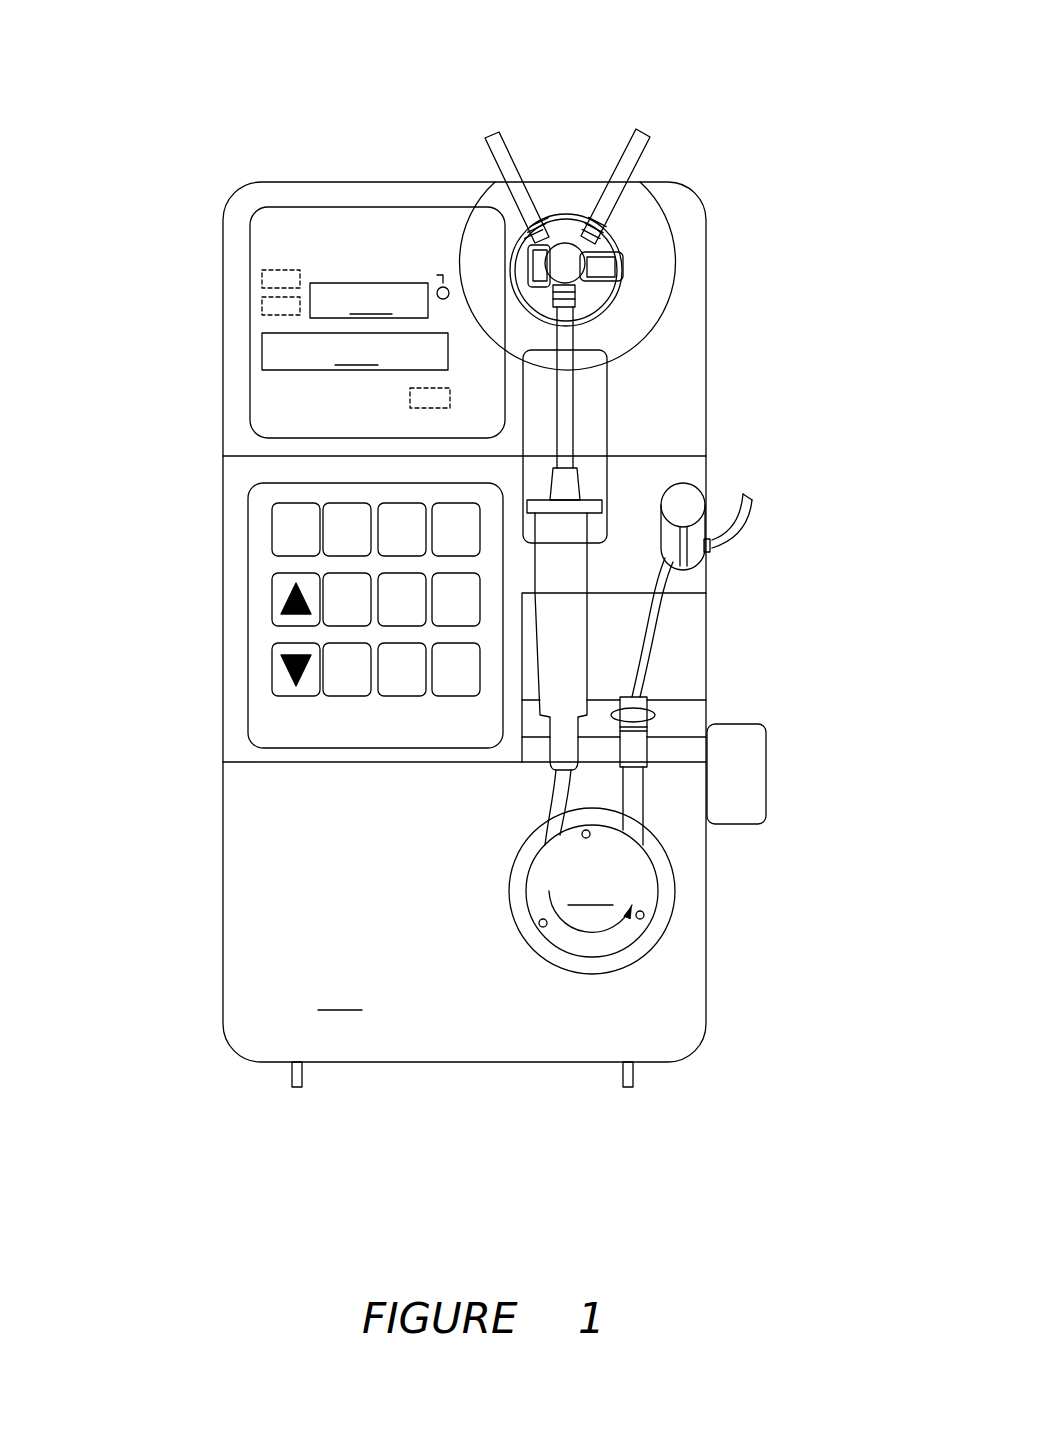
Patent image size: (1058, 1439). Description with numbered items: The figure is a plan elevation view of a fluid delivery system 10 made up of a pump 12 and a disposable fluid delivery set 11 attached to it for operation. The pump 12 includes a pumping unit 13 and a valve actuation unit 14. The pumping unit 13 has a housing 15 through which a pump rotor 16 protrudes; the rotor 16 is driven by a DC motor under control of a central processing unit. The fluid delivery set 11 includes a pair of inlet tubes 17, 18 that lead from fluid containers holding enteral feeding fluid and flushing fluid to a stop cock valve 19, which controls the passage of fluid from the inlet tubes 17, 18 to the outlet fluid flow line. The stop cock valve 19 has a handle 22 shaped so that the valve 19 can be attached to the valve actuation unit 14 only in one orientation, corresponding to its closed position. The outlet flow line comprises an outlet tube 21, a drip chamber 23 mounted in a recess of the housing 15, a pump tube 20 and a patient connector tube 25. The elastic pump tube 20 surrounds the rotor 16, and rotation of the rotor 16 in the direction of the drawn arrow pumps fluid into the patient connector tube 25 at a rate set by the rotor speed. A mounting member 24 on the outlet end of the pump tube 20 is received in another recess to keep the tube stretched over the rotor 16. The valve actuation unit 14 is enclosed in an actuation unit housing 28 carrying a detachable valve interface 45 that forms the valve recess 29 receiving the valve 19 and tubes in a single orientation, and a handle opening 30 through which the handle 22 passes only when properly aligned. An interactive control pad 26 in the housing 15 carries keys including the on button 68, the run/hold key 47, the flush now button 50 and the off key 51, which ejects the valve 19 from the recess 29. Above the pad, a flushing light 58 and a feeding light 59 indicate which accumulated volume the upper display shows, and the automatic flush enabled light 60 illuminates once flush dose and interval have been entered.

The fluid delivery system 10 is at (180, 415).
The fluid delivery set 11 is at (584, 487).
The pump 12 is at (718, 474).
The pumping unit 13 is at (246, 749).
The valve actuation unit 14 is at (212, 338).
The housing 15 is at (340, 995).
The pump rotor 16 is at (592, 891).
The inlet tube 17 is at (498, 152).
The inlet tube 18 is at (635, 148).
The stop cock valve 19 is at (617, 287).
The pump tube 20 is at (550, 806).
The outlet tube 21 is at (565, 410).
The handle 22 is at (612, 262).
The drip chamber 23 is at (563, 605).
The mounting member 24 is at (633, 722).
The patient connector tube 25 is at (752, 497).
The interactive control pad 26 is at (264, 622).
The actuation unit housing 28 is at (313, 194).
The valve recess 29 is at (600, 225).
The handle opening 30 is at (612, 245).
The valve interface 45 is at (497, 218).
The run/hold key 47 is at (395, 683).
The flush now button 50 is at (278, 522).
The off key 51 is at (445, 680).
The flushing light 58 is at (265, 278).
The feeding light 59 is at (265, 310).
The automatic flush enabled light 60 is at (441, 290).
The on button 68 is at (449, 605).